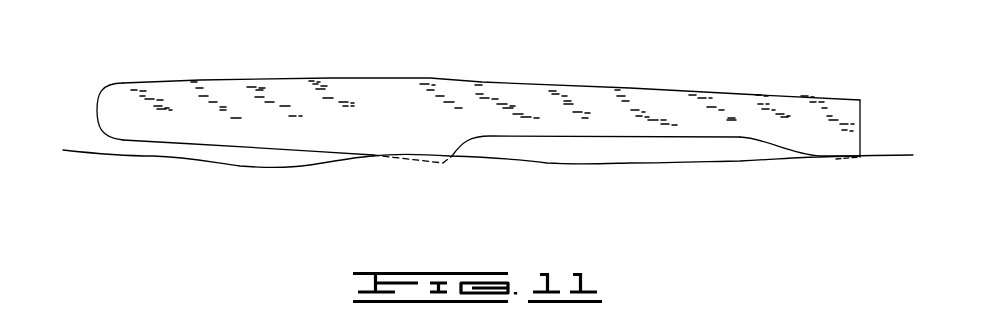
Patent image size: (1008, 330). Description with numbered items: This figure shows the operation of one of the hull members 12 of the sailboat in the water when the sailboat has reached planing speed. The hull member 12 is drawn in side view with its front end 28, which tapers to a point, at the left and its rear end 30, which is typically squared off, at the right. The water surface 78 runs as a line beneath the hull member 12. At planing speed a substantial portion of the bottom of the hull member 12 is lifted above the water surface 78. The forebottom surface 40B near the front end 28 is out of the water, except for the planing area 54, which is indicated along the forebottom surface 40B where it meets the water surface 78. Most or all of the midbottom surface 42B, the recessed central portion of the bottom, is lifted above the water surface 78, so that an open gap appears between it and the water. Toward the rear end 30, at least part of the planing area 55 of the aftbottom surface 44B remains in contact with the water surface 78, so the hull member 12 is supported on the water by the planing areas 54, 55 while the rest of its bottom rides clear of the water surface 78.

The hull member 12 is at (482, 83).
The front end 28 is at (100, 93).
The rear end 30 is at (863, 102).
The forebottom surface 40B is at (260, 145).
The midbottom surface 42B is at (627, 137).
The aftbottom surface 44B is at (837, 162).
The planing area 54 is at (417, 162).
The planing area 55 is at (845, 168).
The water surface 78 is at (888, 152).